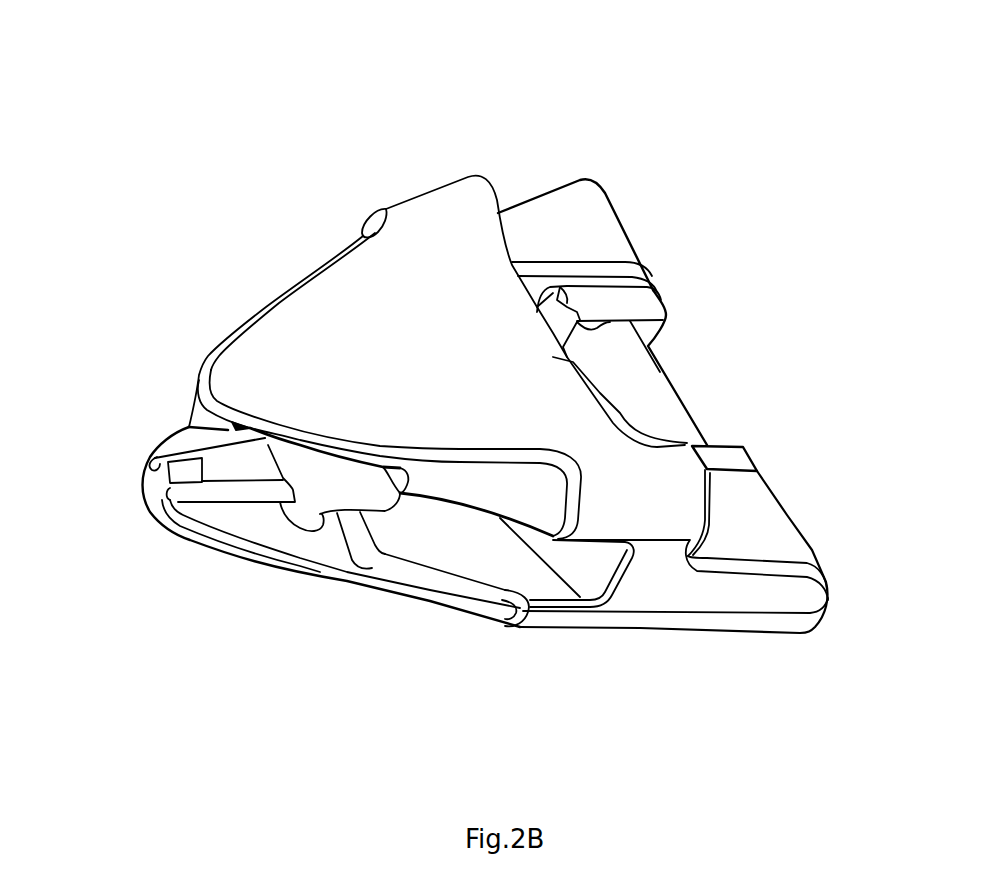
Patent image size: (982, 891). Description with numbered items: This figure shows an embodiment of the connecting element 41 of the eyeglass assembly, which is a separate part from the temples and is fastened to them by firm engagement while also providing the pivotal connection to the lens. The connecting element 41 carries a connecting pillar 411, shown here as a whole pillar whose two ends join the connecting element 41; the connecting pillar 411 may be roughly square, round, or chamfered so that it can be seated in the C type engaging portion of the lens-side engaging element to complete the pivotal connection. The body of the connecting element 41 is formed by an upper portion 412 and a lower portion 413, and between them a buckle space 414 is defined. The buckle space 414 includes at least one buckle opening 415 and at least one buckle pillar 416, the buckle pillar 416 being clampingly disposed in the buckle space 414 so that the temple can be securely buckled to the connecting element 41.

The connecting element 41 is at (155, 42).
The connecting pillar 411 is at (644, 380).
The upper portion 412 is at (250, 360).
The lower portion 413 is at (670, 613).
The buckle space 414 is at (492, 543).
The buckle opening 415 is at (181, 445).
The buckle pillar 416 is at (330, 482).